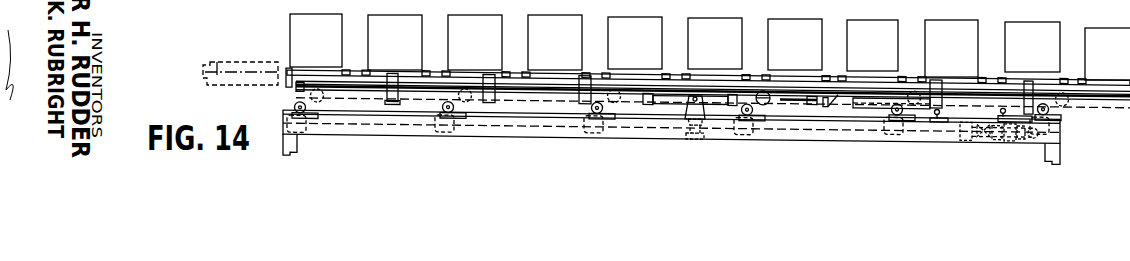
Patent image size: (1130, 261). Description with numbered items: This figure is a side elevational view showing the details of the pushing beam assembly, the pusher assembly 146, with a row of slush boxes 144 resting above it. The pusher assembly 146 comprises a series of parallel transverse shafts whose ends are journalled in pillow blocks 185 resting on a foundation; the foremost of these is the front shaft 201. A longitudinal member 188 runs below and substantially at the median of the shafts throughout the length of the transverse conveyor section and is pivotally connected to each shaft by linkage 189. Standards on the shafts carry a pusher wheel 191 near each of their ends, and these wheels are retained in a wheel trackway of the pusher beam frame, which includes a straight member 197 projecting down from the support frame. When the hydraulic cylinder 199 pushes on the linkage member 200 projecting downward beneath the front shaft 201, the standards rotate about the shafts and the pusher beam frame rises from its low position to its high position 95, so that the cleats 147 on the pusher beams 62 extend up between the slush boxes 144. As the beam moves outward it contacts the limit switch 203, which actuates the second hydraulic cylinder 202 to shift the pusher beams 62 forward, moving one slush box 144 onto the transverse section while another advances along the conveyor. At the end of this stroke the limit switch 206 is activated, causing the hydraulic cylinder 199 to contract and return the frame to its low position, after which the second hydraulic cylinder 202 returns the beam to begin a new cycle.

The pusher beam 62 is at (230, 65).
The stop 95 is at (1104, 0).
The slush box 144 is at (303, 36).
The pusher assembly 146 is at (548, 82).
The cleats 147 is at (422, 72).
The pillow blocks 185 is at (443, 106).
The longitudinal member 188 is at (845, 135).
The linkage 189 is at (301, 119).
The pusher wheel 191 is at (290, 88).
The straight member 197 is at (395, 102).
The hydraulic cylinder 199 is at (1005, 137).
The linkage member 200 is at (1047, 129).
The front shaft 201 is at (1053, 113).
The second hydraulic cylinder 202 is at (675, 101).
The limit switch 203 is at (945, 121).
The limit switch 206 is at (1012, 117).